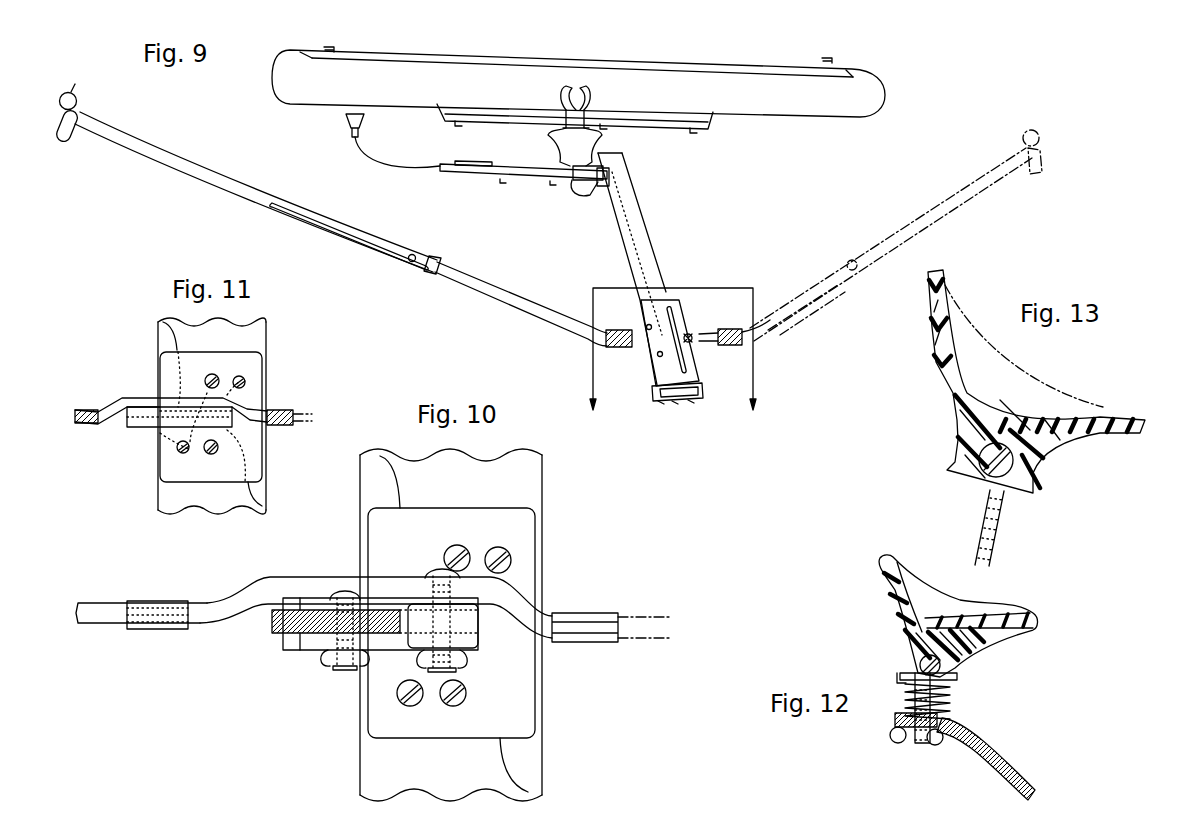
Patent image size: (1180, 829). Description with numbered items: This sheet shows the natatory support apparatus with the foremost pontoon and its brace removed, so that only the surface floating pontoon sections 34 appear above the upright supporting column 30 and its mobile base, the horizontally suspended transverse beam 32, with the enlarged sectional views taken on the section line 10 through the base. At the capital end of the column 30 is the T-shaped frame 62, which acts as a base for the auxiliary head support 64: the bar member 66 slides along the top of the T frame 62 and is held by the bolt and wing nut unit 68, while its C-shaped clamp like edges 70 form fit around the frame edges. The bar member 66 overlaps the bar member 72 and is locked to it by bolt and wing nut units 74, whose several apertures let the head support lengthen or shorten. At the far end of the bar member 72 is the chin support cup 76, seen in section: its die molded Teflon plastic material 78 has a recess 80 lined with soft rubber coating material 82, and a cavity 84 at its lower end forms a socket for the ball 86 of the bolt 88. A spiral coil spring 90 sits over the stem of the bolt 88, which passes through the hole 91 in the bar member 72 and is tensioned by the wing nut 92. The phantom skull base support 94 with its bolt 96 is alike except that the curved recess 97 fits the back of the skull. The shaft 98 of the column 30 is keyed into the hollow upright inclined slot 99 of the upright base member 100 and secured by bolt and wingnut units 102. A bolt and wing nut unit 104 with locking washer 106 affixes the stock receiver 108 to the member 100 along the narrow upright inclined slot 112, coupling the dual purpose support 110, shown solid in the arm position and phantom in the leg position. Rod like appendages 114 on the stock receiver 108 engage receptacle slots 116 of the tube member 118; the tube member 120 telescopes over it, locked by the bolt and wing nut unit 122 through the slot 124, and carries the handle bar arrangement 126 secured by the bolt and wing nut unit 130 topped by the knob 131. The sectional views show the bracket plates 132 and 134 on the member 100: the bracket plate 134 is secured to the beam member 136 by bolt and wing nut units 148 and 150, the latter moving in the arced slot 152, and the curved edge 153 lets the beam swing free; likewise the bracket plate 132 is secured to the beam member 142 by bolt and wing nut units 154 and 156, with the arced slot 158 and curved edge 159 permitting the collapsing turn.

In FIG. 9, the section line 10— 10 is at (672, 372).
In FIG. 9, the upright supporting column 30 is at (642, 224).
In FIG. 9, the horizontally suspended transverse beam 32 is at (683, 413).
In FIG. 11, the horizontally suspended transverse beam 32 is at (280, 501).
In FIG. 10, the horizontally suspended transverse beam 32 is at (548, 792).
In FIG. 9, the surface floating pontoon sections 34 is at (664, 58).
In FIG. 9, the T-shaped frame 62 is at (574, 184).
In FIG. 9, the auxiliary head support 64 is at (436, 172).
In FIG. 9, the bar member 66 is at (522, 174).
In FIG. 9, the bolt and wing nut unit 68 is at (563, 164).
In FIG. 9, the clamp like edges 70 is at (600, 185).
In FIG. 9, the bar member 72 is at (394, 160).
In FIG. 12, the bar member 72 is at (1005, 765).
In FIG. 9, the bolt and wing nut units 74 is at (490, 162).
In FIG. 9, the chin support cup 76 is at (345, 122).
In FIG. 12, the chin support cup 76 is at (872, 573).
In FIG. 12, the Teflon plastic material 78 is at (965, 655).
In FIG. 12, the recess 80 is at (905, 630).
In FIG. 12, the soft rubber coating material 82 is at (1010, 610).
In FIG. 12, the cavity 84 is at (920, 667).
In FIG. 12, the ball 86 is at (958, 674).
In FIG. 12, the bolt 88 is at (922, 744).
In FIG. 12, the spiral coil spring 90 is at (905, 695).
In FIG. 12, the hole 91 is at (940, 722).
In FIG. 12, the wing nut 92 is at (890, 735).
In FIG. 13, the skull base support 94 is at (1040, 362).
In FIG. 13, the bolt 96 is at (992, 520).
In FIG. 13, the curved recess 97 is at (952, 375).
In FIG. 9, the shaft 98 is at (642, 264).
In FIG. 10, the shaft 98 is at (272, 626).
In FIG. 10, the hollow upright inclined slot 99 is at (303, 604).
In FIG. 9, the upright base member 100 is at (642, 314).
In FIG. 10, the upright base member 100 is at (300, 640).
In FIG. 9, the bolt and wingnut units 102 is at (657, 355).
In FIG. 10, the bolt and wingnut units 102 is at (346, 590).
In FIG. 9, the bolt and wing nut unit 104 is at (692, 340).
In FIG. 10, the bolt and wing nut unit 104 is at (420, 662).
In FIG. 10, the locking washer 106 is at (478, 650).
In FIG. 9, the stock receiver 108 is at (704, 344).
In FIG. 11, the stock receiver 108 is at (122, 398).
In FIG. 10, the stock receiver 108 is at (252, 592).
In FIG. 9, the dual purpose support 110 is at (268, 184).
In FIG. 9, the narrow upright inclined slot 112 is at (673, 322).
In FIG. 10, the rod like appendages 114 is at (597, 642).
In FIG. 10, the receptacle slots 116 is at (165, 628).
In FIG. 9, the tube member 118 is at (528, 316).
In FIG. 10, the tube member 118 is at (96, 620).
In FIG. 9, the tube member 120 is at (210, 184).
In FIG. 9, the bolt and wing nut unit 122 is at (410, 263).
In FIG. 9, the slot 124 is at (335, 232).
In FIG. 9, the handle bar arrangement 126 is at (73, 145).
In FIG. 9, the bolt and wing nut unit 130 is at (78, 98).
In FIG. 9, the knob 131 is at (75, 78).
In FIG. 11, the bracket plate 132 is at (168, 368).
In FIG. 10, the bracket plate 132 is at (540, 537).
In FIG. 11, the bracket plate 134 is at (258, 452).
In FIG. 10, the bracket plate 134 is at (372, 705).
In FIG. 11, the beam member 136 is at (167, 498).
In FIG. 10, the beam member 136 is at (372, 758).
In FIG. 11, the beam member 142 is at (262, 338).
In FIG. 10, the beam member 142 is at (540, 493).
In FIG. 11, the bolt and wing nut unit 148 is at (211, 453).
In FIG. 10, the bolt and wing nut unit 148 is at (458, 702).
In FIG. 11, the bolt and wing nut unit 150 is at (181, 450).
In FIG. 10, the bolt and wing nut unit 150 is at (412, 702).
In FIG. 11, the arced slot 152 is at (163, 430).
In FIG. 11, the curved edge 153 is at (260, 495).
In FIG. 11, the bolt and wing nut unit 154 is at (211, 375).
In FIG. 10, the bolt and wing nut unit 154 is at (452, 552).
In FIG. 11, the bolt and wing nut unit 156 is at (245, 382).
In FIG. 10, the bolt and wing nut unit 156 is at (496, 548).
In FIG. 11, the arced slot 158 is at (250, 398).
In FIG. 11, the curved edge 159 is at (165, 338).